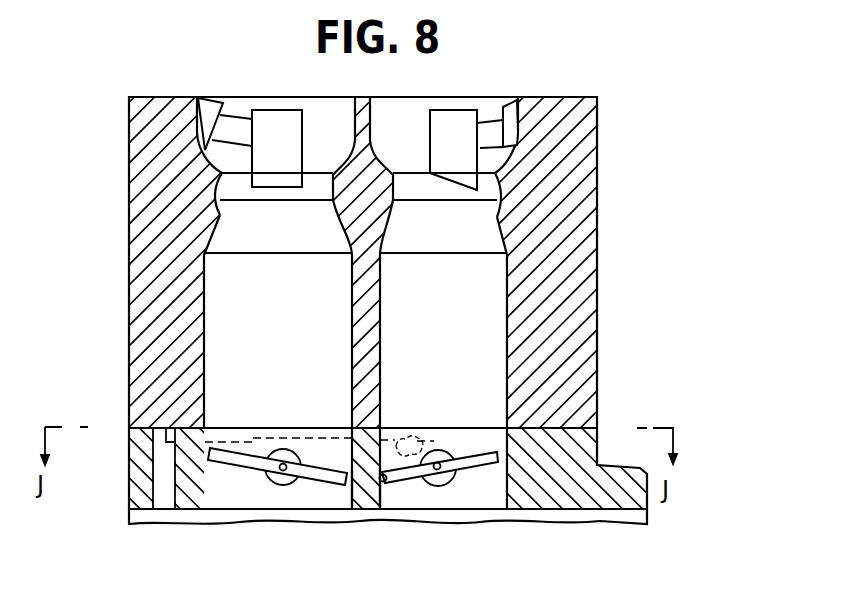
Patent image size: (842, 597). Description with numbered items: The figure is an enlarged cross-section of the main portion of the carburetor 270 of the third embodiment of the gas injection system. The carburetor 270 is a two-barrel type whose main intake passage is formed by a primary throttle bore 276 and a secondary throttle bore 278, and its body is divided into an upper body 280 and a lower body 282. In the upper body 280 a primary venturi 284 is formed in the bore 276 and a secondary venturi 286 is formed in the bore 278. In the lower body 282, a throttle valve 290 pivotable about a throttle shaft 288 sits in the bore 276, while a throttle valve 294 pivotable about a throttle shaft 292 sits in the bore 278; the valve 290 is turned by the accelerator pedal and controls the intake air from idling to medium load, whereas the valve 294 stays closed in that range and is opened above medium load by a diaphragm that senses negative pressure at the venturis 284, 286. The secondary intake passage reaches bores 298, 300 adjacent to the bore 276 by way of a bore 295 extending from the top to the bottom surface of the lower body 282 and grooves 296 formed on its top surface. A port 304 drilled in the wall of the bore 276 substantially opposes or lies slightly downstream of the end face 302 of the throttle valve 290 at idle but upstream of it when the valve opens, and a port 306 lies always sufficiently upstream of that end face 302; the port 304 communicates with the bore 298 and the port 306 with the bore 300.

The carburetor 270 is at (685, 139).
The upper body 280 is at (598, 236).
The secondary throttle bore 278 is at (216, 313).
The primary throttle bore 276 is at (508, 343).
The secondary venturi 286 is at (221, 214).
The primary venturi 284 is at (497, 212).
The lower body 282 is at (598, 448).
The bore 295 is at (153, 483).
The grooves 296 is at (228, 442).
The bore 298 is at (343, 442).
The bore 300 is at (389, 440).
The port 306 is at (438, 441).
The throttle shaft 292 is at (284, 465).
The throttle valve 294 is at (217, 460).
The throttle shaft 288 is at (443, 470).
The throttle valve 290 is at (488, 450).
The port 304 is at (389, 482).
The end face 302 is at (371, 482).